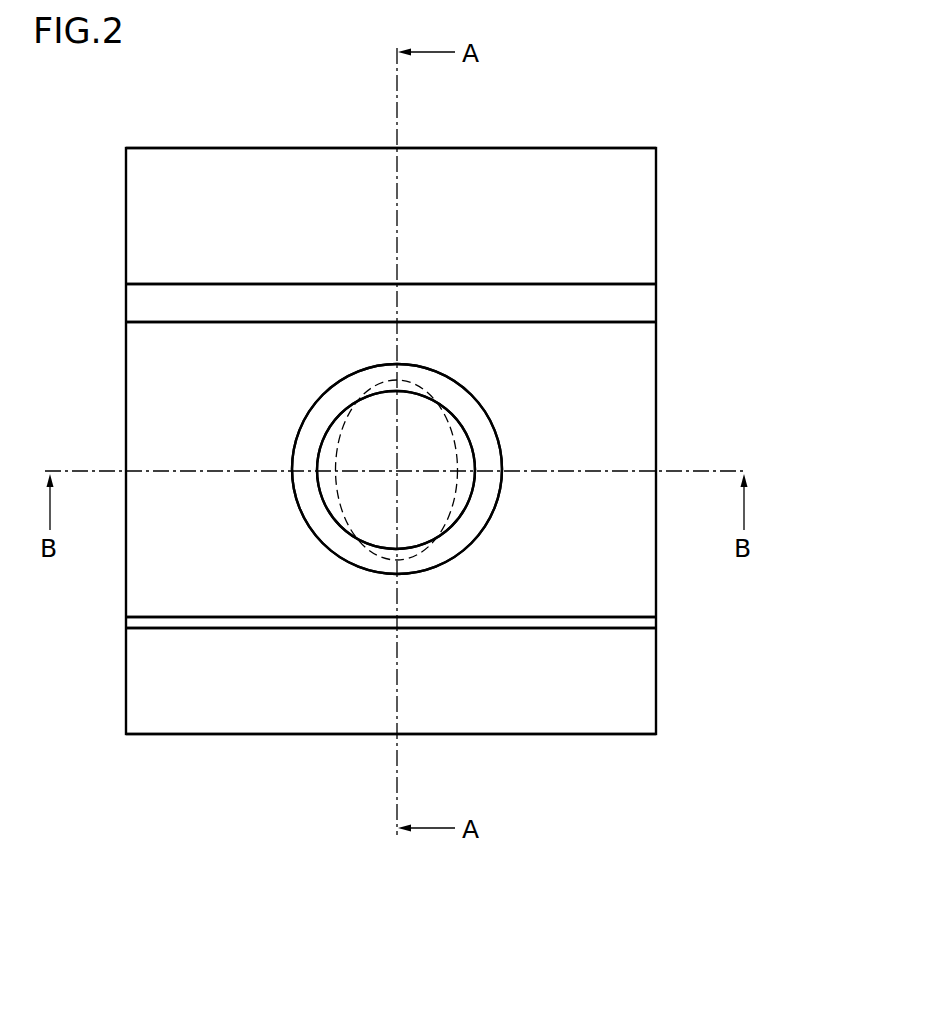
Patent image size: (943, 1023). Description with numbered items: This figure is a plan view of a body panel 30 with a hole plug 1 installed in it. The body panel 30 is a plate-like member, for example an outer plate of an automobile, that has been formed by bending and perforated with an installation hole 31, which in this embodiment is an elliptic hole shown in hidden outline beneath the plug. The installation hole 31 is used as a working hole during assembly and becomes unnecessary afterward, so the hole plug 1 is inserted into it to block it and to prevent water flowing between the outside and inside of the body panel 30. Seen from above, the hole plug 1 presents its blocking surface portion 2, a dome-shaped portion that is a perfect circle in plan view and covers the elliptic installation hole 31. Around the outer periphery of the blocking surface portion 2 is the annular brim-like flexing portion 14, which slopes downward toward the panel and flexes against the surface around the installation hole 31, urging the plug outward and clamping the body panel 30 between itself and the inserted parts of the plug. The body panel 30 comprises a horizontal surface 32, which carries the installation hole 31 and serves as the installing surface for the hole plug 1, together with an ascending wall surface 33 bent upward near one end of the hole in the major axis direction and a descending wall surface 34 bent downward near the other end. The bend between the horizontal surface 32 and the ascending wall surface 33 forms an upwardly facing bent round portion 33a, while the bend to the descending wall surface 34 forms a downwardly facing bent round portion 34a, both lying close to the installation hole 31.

The hole plug 1 is at (470, 404).
The blocking surface portion 2 is at (323, 448).
The brim-like flexing portion 14 is at (467, 527).
The body panel 30 is at (140, 580).
The installation hole 31 is at (367, 550).
The horizontal surface 32 is at (645, 570).
The ascending wall surface 33 is at (645, 687).
The bent round portion 33a is at (617, 618).
The descending wall surface 34 is at (650, 210).
The bent round portion 34a is at (650, 303).